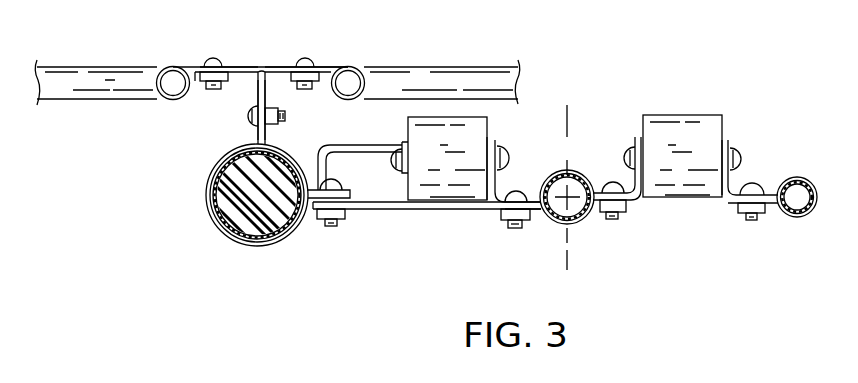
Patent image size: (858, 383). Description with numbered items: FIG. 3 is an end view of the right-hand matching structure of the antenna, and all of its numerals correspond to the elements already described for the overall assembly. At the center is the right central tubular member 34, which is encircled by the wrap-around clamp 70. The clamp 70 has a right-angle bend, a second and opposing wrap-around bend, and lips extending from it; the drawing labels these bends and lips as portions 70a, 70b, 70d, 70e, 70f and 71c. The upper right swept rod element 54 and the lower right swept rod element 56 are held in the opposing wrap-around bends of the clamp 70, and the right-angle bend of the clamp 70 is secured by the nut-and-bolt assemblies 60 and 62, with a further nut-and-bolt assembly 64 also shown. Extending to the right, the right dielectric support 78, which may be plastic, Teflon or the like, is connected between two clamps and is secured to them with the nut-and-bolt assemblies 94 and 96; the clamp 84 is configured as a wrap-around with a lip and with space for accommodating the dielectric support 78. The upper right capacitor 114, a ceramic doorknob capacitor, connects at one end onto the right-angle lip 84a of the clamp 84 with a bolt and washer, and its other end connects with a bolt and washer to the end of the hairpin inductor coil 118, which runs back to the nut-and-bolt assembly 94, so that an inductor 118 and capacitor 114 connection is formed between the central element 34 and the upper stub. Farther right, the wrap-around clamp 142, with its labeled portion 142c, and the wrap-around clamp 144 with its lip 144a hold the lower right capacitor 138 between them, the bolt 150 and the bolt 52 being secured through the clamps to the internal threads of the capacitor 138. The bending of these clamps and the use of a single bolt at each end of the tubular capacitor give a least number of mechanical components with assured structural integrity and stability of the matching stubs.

The right central tubular member 34 is at (268, 228).
The nut-and-bolt assembly 52 is at (754, 222).
The upper right swept rod element 54 is at (173, 88).
The lower right swept rod element 56 is at (347, 92).
The nut-and-bolt assembly 60 is at (204, 58).
The nut-and-bolt assembly 62 is at (315, 56).
The nut-and-bolt assembly 64 is at (283, 121).
The wrap-around clamp 70 is at (257, 247).
The clamp band leg 70a is at (257, 100).
The clamp band leg 70b is at (266, 90).
The clamp band flange 70d is at (285, 66).
The clamp band lip 70e is at (195, 79).
The clamp band bend 70f is at (279, 80).
The clamp band flange 71c is at (240, 64).
The right dielectric support 78 is at (468, 209).
The clamp 84 is at (545, 211).
The right-angle lip 84a is at (496, 190).
The nut-and-bolt assembly 94 is at (331, 226).
The nut-and-bolt assembly 96 is at (509, 230).
The upper right capacitor 114 is at (490, 122).
The inductor coil 118 is at (350, 153).
The lower right capacitor 138 is at (690, 113).
The wrap-around clamp 142 is at (578, 219).
The clamp leg 142c is at (635, 183).
The wrap-around clamp 144 is at (807, 216).
The lip 144a is at (727, 193).
The bolt 150 is at (618, 221).